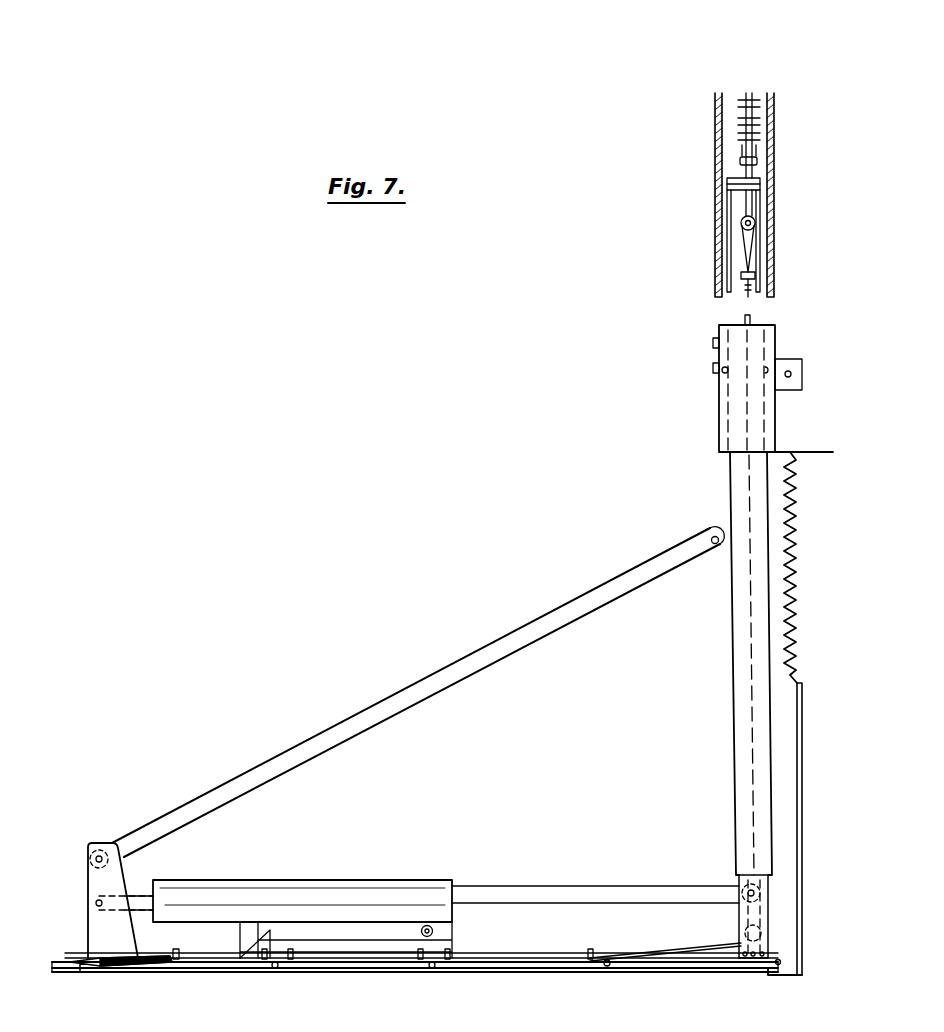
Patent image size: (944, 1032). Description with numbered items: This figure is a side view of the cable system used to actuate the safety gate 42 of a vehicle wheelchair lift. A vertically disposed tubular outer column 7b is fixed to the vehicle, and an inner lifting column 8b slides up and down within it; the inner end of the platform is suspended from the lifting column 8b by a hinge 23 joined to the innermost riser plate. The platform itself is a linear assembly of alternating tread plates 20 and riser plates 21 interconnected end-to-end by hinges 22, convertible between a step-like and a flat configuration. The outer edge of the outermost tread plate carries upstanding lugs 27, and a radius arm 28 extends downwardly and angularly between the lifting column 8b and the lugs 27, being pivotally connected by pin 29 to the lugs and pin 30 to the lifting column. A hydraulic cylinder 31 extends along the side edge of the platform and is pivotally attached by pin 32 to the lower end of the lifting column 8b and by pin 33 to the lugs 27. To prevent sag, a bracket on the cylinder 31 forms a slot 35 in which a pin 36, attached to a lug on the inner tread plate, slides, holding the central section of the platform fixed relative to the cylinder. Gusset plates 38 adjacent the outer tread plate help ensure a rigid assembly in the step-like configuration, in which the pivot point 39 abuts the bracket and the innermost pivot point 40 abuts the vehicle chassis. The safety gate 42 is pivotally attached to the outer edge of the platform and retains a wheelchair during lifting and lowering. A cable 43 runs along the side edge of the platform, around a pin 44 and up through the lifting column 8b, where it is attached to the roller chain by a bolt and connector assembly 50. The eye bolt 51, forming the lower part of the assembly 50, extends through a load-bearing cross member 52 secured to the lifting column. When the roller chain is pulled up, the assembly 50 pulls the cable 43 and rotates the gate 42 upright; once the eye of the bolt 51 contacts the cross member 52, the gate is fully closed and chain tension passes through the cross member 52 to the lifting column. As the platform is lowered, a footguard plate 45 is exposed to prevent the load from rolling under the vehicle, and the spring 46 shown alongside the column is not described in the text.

The tubular outer column 7b is at (719, 404).
The inner lifting column 8b is at (732, 618).
The tread plate 20 is at (165, 965).
The riser plate 21 is at (352, 968).
The hinge 22 is at (275, 968).
The hinge 23 is at (779, 961).
The upstanding lug 27 is at (88, 882).
The radius arm 28 is at (464, 666).
The pin 29 is at (100, 855).
The pin 30 is at (712, 536).
The hydraulic cylinder 31 is at (292, 890).
The pin 32 is at (747, 891).
The pin 33 is at (95, 905).
The slot 35 is at (342, 922).
The pin 36 is at (434, 931).
The gusset plate 38 is at (246, 952).
The pivot point 39 is at (432, 968).
The innermost pivot point 40 is at (607, 966).
The safety gate 42 is at (62, 973).
The cable 43 is at (662, 955).
The pin 44 is at (745, 932).
The footguard plate 45 is at (803, 818).
The spring 46 is at (797, 576).
The bolt and connector assembly 50 is at (746, 148).
The eye bolt 51 is at (741, 222).
The load-bearing cross member 52 is at (752, 186).